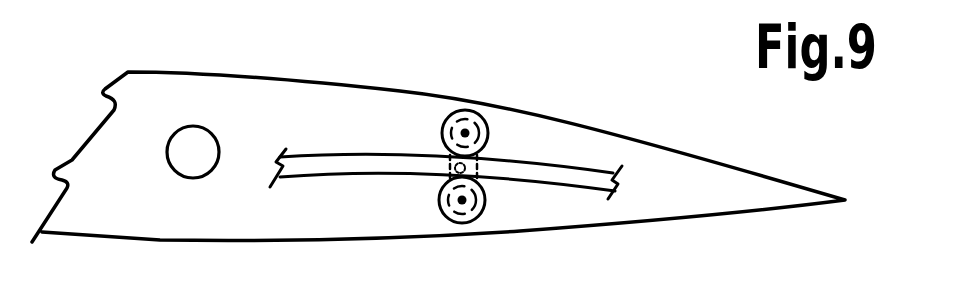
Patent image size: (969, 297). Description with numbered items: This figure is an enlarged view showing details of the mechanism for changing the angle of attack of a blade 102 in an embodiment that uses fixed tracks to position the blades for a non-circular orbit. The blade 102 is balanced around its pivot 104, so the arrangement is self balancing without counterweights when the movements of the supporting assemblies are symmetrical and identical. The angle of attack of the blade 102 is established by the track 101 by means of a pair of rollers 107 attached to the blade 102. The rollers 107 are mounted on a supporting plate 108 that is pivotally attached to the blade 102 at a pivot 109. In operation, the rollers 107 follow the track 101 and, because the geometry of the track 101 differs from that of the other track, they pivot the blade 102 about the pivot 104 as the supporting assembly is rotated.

The track 101 is at (532, 183).
The blade 102 is at (523, 111).
The pivot 104 is at (222, 138).
The rollers 107 is at (466, 166).
The supporting plate 108 is at (444, 132).
The pivot 109 is at (456, 173).